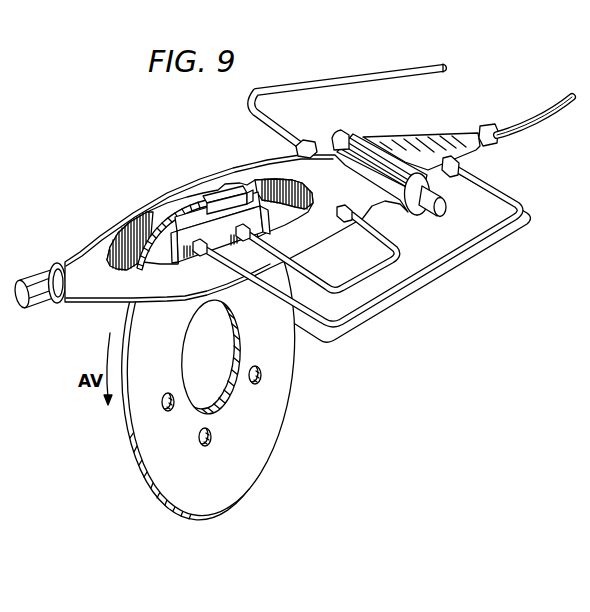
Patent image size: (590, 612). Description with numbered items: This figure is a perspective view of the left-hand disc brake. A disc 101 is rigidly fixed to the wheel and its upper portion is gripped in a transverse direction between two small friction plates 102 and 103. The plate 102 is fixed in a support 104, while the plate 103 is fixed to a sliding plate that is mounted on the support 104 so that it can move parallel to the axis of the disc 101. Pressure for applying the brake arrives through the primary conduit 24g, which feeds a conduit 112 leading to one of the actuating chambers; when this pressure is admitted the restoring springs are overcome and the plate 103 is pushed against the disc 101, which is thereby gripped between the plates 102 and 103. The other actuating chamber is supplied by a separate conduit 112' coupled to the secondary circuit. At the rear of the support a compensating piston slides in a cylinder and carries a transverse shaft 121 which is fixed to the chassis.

The primary conduit 24g is at (343, 77).
The disc 101 is at (283, 362).
The friction plate 102 is at (162, 211).
The friction plate 103 is at (202, 224).
The support 104 is at (87, 245).
The conduit 112 is at (337, 247).
The conduit 112' is at (356, 240).
The transverse shaft 121 is at (442, 210).